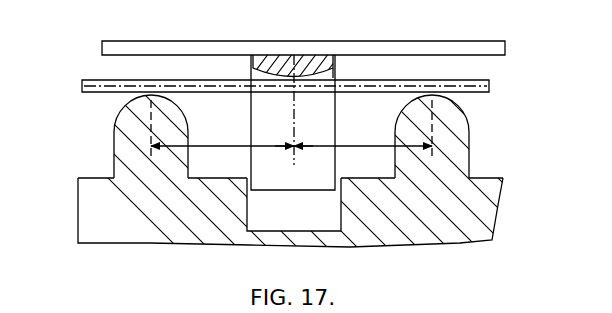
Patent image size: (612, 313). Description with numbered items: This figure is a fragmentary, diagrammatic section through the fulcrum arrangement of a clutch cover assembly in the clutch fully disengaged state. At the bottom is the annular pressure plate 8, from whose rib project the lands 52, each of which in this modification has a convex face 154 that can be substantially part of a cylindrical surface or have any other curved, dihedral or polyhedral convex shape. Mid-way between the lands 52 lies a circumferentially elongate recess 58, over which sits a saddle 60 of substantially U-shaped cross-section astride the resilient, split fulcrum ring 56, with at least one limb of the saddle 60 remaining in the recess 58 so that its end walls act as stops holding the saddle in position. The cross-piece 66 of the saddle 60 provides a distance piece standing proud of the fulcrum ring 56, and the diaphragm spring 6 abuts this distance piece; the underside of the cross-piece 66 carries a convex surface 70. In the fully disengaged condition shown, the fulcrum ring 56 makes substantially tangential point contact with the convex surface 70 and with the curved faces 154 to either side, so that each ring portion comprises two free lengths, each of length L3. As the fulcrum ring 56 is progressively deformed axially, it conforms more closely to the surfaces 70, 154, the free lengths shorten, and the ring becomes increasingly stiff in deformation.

The diaphragm spring 6 is at (388, 37).
The cross-piece 66 is at (306, 62).
The convex surface 70 is at (330, 73).
The fulcrum ring 56 is at (482, 85).
The saddle 60 is at (336, 111).
The recess 58 is at (326, 218).
The pressure plate 8 is at (76, 201).
The land 52 is at (114, 156).
The convex face 154 is at (130, 102).
The free length L3 is at (232, 148).